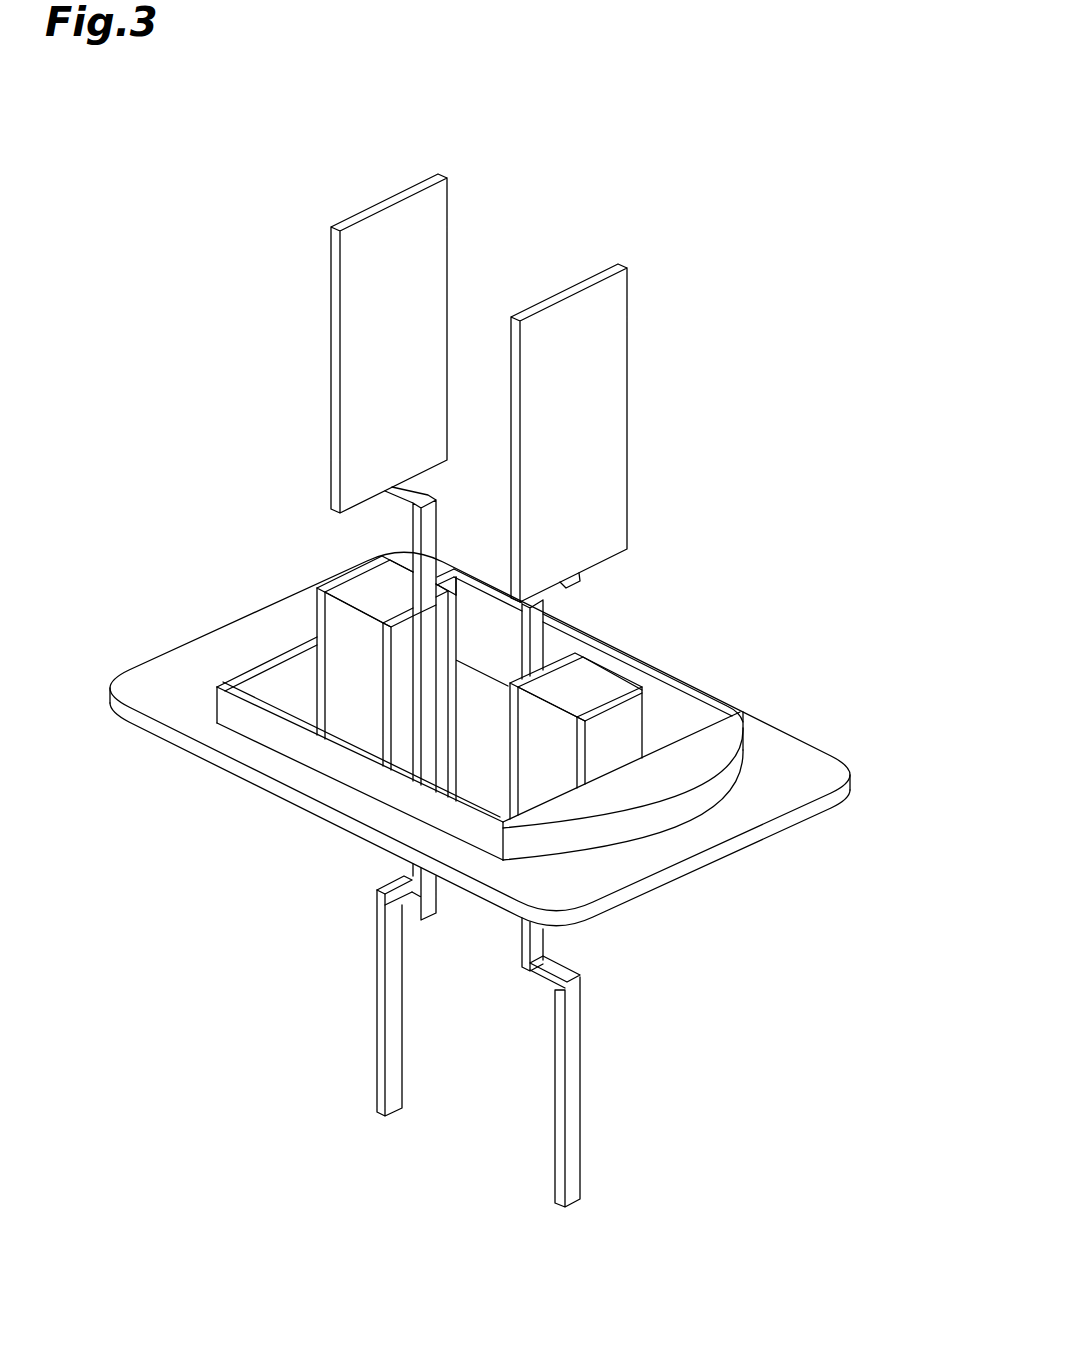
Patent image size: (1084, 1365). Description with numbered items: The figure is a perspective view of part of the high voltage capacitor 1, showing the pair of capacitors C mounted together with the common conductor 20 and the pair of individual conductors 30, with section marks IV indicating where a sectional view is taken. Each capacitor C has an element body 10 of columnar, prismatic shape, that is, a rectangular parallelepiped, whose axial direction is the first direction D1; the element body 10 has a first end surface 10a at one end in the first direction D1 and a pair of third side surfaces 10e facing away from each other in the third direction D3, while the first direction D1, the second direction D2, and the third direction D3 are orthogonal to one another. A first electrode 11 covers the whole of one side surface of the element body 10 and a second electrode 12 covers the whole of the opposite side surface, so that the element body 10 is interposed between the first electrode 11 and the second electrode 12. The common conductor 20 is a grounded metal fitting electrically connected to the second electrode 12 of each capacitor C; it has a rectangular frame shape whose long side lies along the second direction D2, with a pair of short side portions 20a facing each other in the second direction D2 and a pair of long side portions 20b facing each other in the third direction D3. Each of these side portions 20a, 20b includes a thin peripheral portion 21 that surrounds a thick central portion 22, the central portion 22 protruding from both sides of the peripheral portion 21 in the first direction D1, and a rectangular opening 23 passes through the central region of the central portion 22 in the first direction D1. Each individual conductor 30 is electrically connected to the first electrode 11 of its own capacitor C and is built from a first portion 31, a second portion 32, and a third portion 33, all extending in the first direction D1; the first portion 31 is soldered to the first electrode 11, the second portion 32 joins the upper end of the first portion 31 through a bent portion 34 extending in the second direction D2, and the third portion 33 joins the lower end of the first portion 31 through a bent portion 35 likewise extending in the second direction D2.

The high voltage capacitor 1 is at (781, 278).
The element body 10 is at (448, 717).
The first end surface 10a is at (363, 592).
The third side surfaces 10e is at (335, 738).
The first electrode 11 is at (405, 735).
The second electrode 12 is at (614, 748).
The common conductor 20 is at (773, 732).
The side portions 20a is at (257, 612).
The side portions 20b is at (303, 775).
The peripheral portion 21 is at (790, 797).
The central portion 22 is at (687, 742).
The opening 23 is at (665, 697).
The individual conductor 30 is at (515, 651).
The first portion 31 is at (430, 893).
The second portion 32 is at (422, 266).
The third portion 33 is at (393, 1057).
The bent portion 34 is at (418, 492).
The bent portion 35 is at (380, 912).
The capacitor C is at (317, 671).
The first direction D1 is at (912, 676).
The second direction D2 is at (267, 1176).
The third direction D3 is at (629, 1258).
The section line IV- IV is at (168, 540).